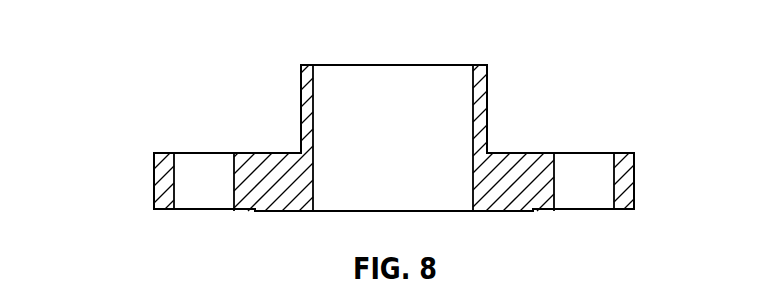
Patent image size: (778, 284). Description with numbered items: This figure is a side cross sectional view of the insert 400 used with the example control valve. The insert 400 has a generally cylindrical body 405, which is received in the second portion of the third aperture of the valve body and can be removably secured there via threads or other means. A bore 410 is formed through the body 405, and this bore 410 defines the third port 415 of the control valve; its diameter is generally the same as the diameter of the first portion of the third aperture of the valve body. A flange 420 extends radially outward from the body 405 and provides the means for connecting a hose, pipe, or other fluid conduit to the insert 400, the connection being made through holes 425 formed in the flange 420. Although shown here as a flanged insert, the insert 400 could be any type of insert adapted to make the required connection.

The insert 400 is at (231, 33).
The body 405 is at (306, 91).
The bore 410 is at (473, 118).
The third port 415 is at (416, 170).
The flange 420 is at (628, 183).
The holes 425 is at (197, 168).